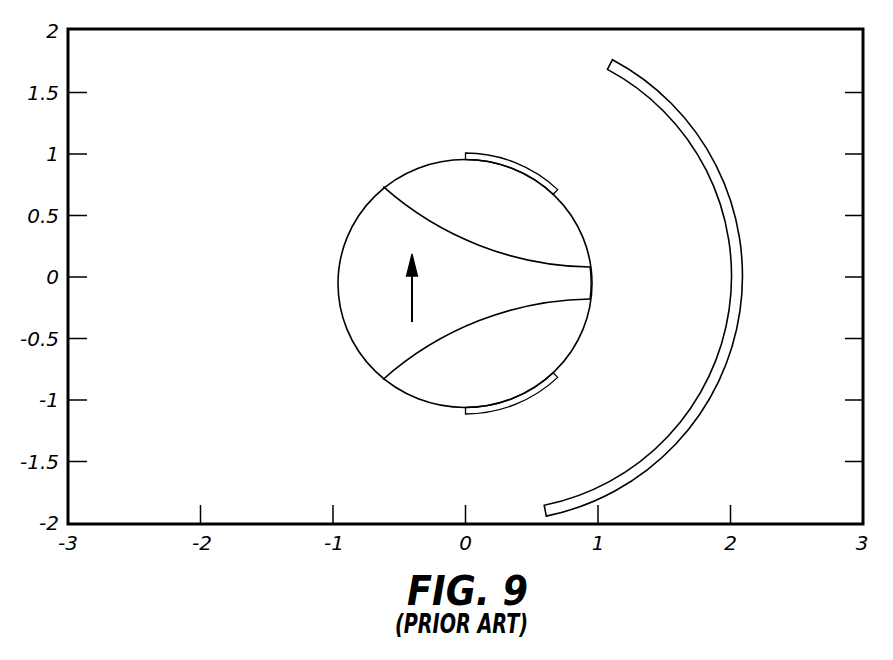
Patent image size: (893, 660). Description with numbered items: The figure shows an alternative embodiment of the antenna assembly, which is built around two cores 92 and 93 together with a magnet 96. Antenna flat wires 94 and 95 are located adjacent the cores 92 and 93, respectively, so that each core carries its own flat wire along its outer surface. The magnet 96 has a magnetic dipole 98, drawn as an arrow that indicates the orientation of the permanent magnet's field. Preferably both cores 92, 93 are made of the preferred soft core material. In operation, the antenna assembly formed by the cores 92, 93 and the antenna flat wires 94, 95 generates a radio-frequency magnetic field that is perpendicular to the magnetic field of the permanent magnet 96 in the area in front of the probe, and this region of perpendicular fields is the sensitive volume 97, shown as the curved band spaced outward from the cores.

The core 92 is at (568, 247).
The core 93 is at (553, 347).
The antenna flat wire 94 is at (533, 163).
The antenna flat wire 95 is at (522, 408).
The magnet 96 is at (575, 287).
The sensitive volume 97 is at (658, 97).
The magnetic dipole 98 is at (420, 279).